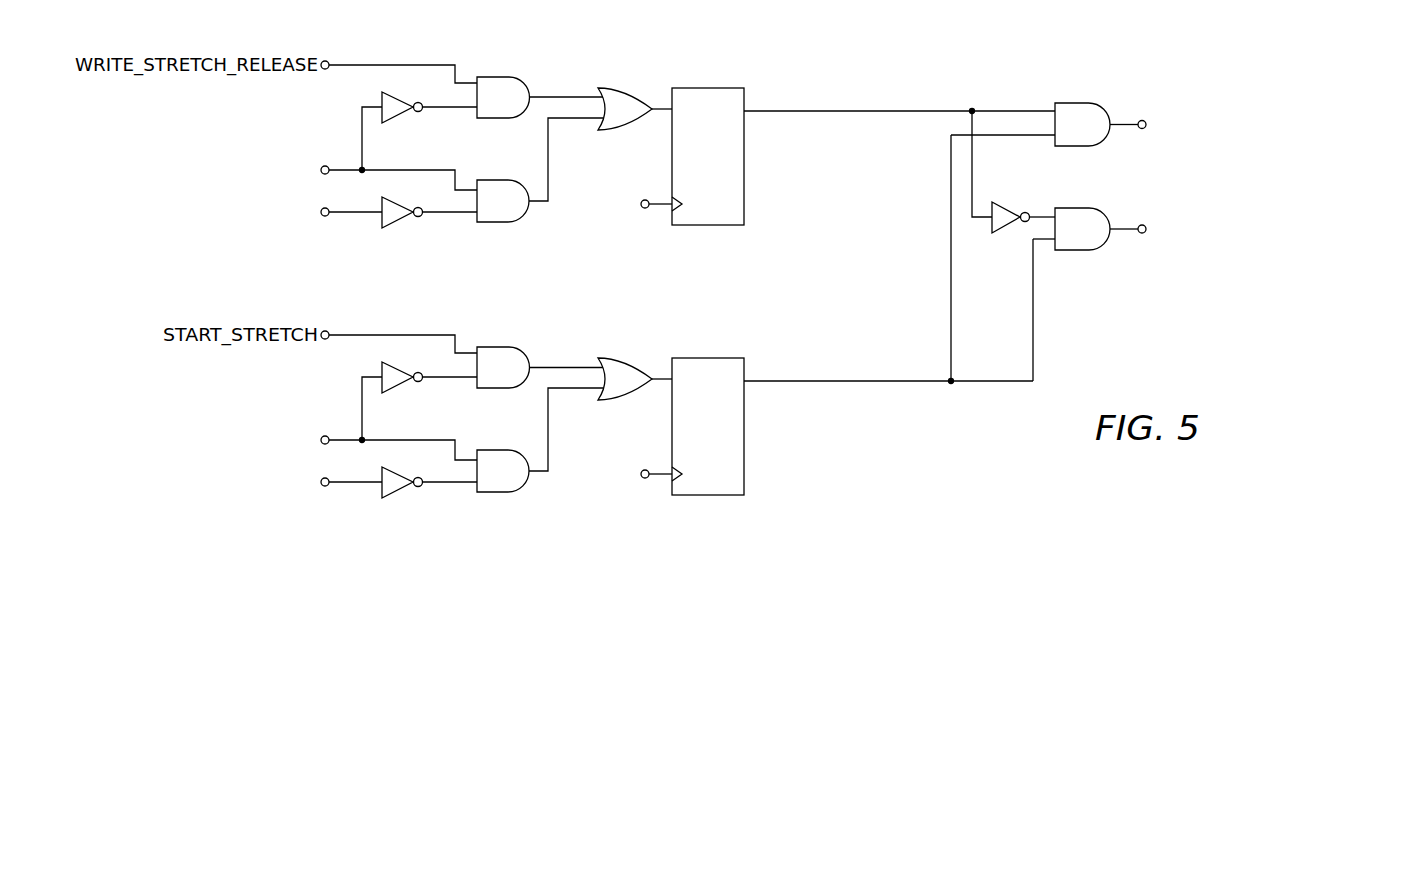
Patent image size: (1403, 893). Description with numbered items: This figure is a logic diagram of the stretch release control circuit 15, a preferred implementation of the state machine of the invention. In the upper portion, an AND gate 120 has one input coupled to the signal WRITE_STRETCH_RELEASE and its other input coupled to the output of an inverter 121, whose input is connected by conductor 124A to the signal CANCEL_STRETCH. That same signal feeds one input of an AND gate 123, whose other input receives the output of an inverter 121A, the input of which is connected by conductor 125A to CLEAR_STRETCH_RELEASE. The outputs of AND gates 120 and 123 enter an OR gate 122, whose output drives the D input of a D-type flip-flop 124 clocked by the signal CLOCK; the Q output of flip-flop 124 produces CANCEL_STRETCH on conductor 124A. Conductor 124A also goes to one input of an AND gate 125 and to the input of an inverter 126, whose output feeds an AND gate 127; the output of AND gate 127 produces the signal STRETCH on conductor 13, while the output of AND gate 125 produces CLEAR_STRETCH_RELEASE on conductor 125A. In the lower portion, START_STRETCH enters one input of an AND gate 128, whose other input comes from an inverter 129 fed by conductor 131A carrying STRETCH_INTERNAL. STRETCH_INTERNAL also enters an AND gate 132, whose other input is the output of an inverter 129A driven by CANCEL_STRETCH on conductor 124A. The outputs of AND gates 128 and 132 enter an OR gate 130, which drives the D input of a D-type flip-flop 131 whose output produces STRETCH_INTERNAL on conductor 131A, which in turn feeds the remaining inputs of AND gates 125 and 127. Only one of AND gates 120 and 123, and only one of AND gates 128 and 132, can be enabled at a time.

The conductor 13 is at (1120, 232).
The stretch release control circuit 15 is at (940, 452).
The AND gate 120 is at (492, 76).
The inverter 121 is at (405, 119).
The inverter 121A is at (405, 224).
The OR gate 122 is at (610, 87).
The AND gate 123 is at (492, 223).
The D-type flip-flop 124 is at (708, 87).
The conductor 124A is at (325, 158).
The AND gate 125 is at (1070, 102).
The conductor 125A is at (325, 216).
The inverter 126 is at (1010, 205).
The AND gate 127 is at (1075, 252).
The AND gate 128 is at (492, 346).
The inverter 129 is at (405, 389).
The inverter 129A is at (405, 494).
The OR gate 130 is at (610, 357).
The D-type flip-flop 131 is at (708, 357).
The conductor 131A is at (325, 428).
The AND gate 132 is at (492, 493).